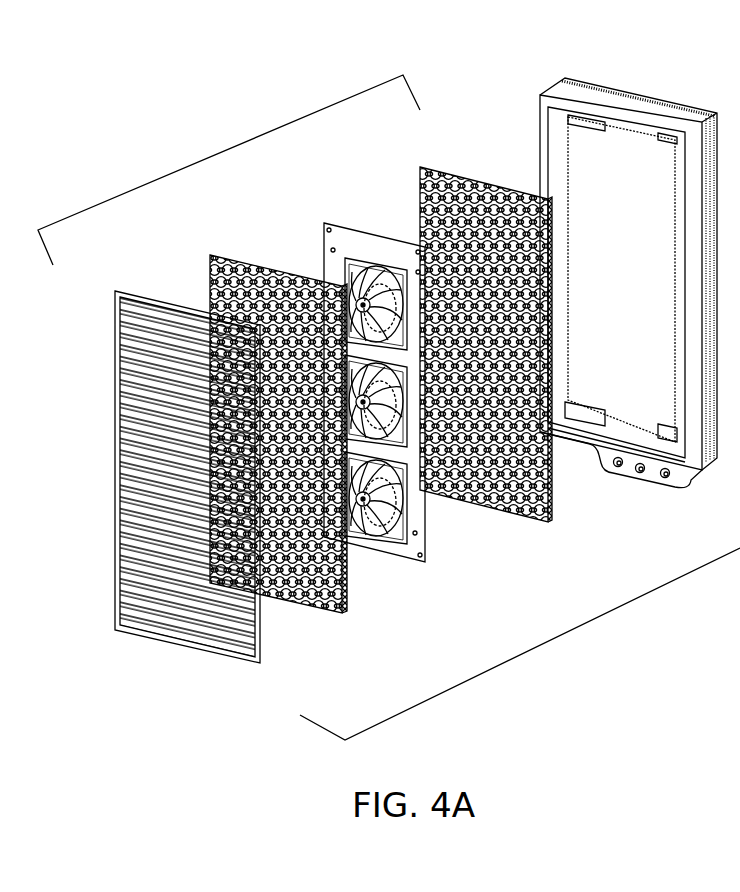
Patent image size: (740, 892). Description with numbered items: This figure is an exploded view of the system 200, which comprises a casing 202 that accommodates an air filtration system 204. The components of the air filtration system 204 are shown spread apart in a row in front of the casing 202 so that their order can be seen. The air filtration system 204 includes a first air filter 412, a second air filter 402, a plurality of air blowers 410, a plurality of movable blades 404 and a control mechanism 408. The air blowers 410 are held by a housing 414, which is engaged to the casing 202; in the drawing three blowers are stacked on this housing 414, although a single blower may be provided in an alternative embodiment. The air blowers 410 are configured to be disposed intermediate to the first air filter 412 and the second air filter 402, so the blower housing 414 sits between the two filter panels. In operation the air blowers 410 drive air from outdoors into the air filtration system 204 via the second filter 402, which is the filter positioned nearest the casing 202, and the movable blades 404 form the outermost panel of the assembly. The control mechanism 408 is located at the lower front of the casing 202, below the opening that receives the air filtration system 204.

The system 200 is at (457, 687).
The casing 202 is at (538, 130).
The air filtration system 204 is at (268, 131).
The second air filter 402 is at (432, 167).
The movable blades 404 is at (140, 290).
The control mechanism 408 is at (645, 488).
The air blowers 410 is at (347, 257).
The first air filter 412 is at (233, 253).
The housing 414 is at (392, 235).